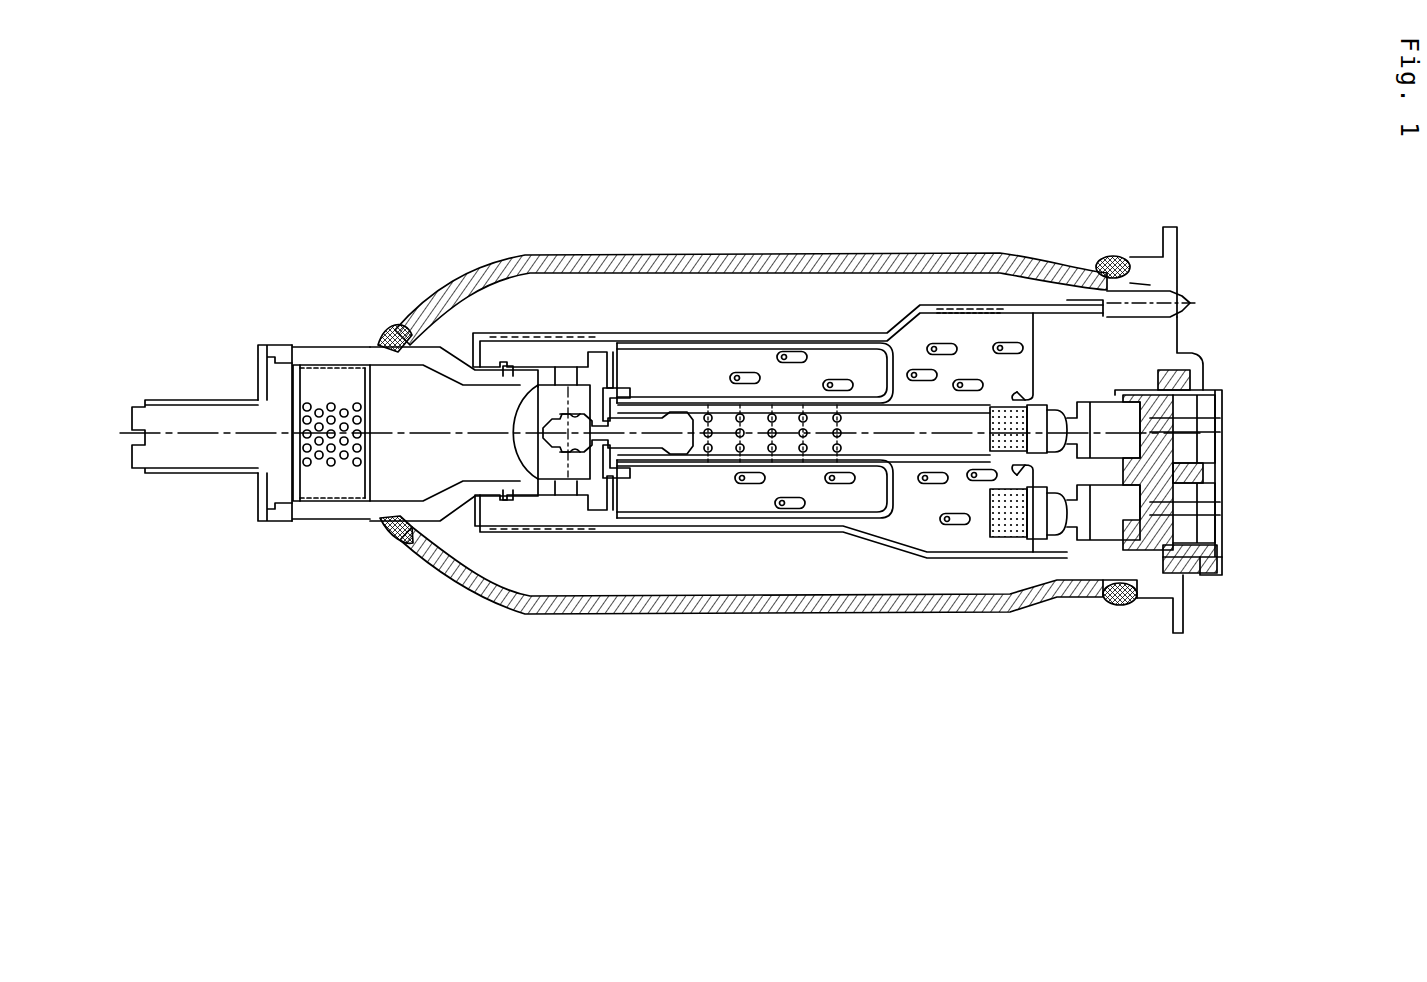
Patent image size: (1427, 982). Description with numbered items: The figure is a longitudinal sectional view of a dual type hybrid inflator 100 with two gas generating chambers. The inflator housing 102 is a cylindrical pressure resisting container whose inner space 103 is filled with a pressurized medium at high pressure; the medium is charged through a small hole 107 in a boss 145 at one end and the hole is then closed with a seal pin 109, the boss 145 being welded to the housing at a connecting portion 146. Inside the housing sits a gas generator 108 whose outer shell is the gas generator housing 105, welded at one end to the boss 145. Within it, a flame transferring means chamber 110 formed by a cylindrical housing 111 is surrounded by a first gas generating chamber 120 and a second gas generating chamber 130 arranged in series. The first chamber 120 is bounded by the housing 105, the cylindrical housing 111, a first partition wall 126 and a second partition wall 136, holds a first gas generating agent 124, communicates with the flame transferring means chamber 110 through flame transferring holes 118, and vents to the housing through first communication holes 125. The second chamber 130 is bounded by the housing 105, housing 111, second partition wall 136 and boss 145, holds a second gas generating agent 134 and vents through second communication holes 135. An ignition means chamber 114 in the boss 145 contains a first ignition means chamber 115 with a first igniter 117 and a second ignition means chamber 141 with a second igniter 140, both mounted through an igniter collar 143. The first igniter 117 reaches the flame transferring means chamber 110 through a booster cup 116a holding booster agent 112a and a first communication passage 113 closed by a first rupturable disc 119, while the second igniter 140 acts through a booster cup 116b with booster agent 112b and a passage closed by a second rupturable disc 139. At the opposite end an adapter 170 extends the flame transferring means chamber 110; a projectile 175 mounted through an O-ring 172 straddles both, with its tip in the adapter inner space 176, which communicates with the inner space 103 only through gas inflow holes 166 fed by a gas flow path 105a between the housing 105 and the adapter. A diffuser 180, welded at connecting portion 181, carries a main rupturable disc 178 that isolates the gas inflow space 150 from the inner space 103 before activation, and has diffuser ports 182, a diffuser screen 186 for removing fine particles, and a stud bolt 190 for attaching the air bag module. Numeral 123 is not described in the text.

The hybrid inflator 100 is at (703, 240).
The inflator housing 102 is at (650, 615).
The inner space 103 is at (751, 299).
The gas generator housing 105 is at (892, 327).
The gas flow path 105a is at (546, 428).
The small hole 107 is at (1080, 300).
The gas generator 108 is at (768, 312).
The seal pin 109 is at (1186, 292).
The flame transferring means chamber 110 is at (804, 433).
The cylindrical housing 111 is at (945, 552).
The booster agent 112a is at (1023, 405).
The booster agent 112b is at (1008, 520).
The first communication passage 113 is at (1200, 372).
The ignition means chamber 114 is at (1340, 432).
The first ignition means chamber 115 is at (1226, 428).
The booster cup 116a is at (1078, 404).
The booster cup 116b is at (1082, 542).
The first igniter 117 is at (1205, 395).
The flame transferring holes 118 is at (843, 447).
The first rupturable disc 119 is at (1178, 346).
The first gas generating chamber 120 is at (755, 430).
The end wall 123 is at (1130, 548).
The first gas generating agent 124 is at (872, 540).
The first communication holes 125 is at (800, 337).
The first partition wall 126 is at (705, 345).
The second gas generating chamber 130 is at (1006, 415).
The second gas generating agent 134 is at (1014, 333).
The second communication holes 135 is at (962, 310).
The second partition wall 136 is at (900, 540).
The second rupturable disc 139 is at (1077, 585).
The second igniter 140 is at (1160, 602).
The second ignition means chamber 141 is at (1226, 513).
The igniter collar 143 is at (1217, 570).
The boss 145 is at (1152, 265).
The connecting portion 146 is at (1106, 256).
The gas inflow space 150 is at (454, 434).
The gas inflow holes 166 is at (566, 378).
The adapter 170 is at (545, 500).
The O-ring 172 is at (620, 410).
The projectile 175 is at (607, 480).
The inner space 176 is at (568, 419).
The main rupturable disc 178 is at (520, 452).
The diffuser 180 is at (283, 528).
The connecting portion 181 is at (388, 336).
The diffuser ports 182 is at (328, 523).
The diffuser screen 186 is at (312, 412).
The stud bolt 190 is at (193, 475).